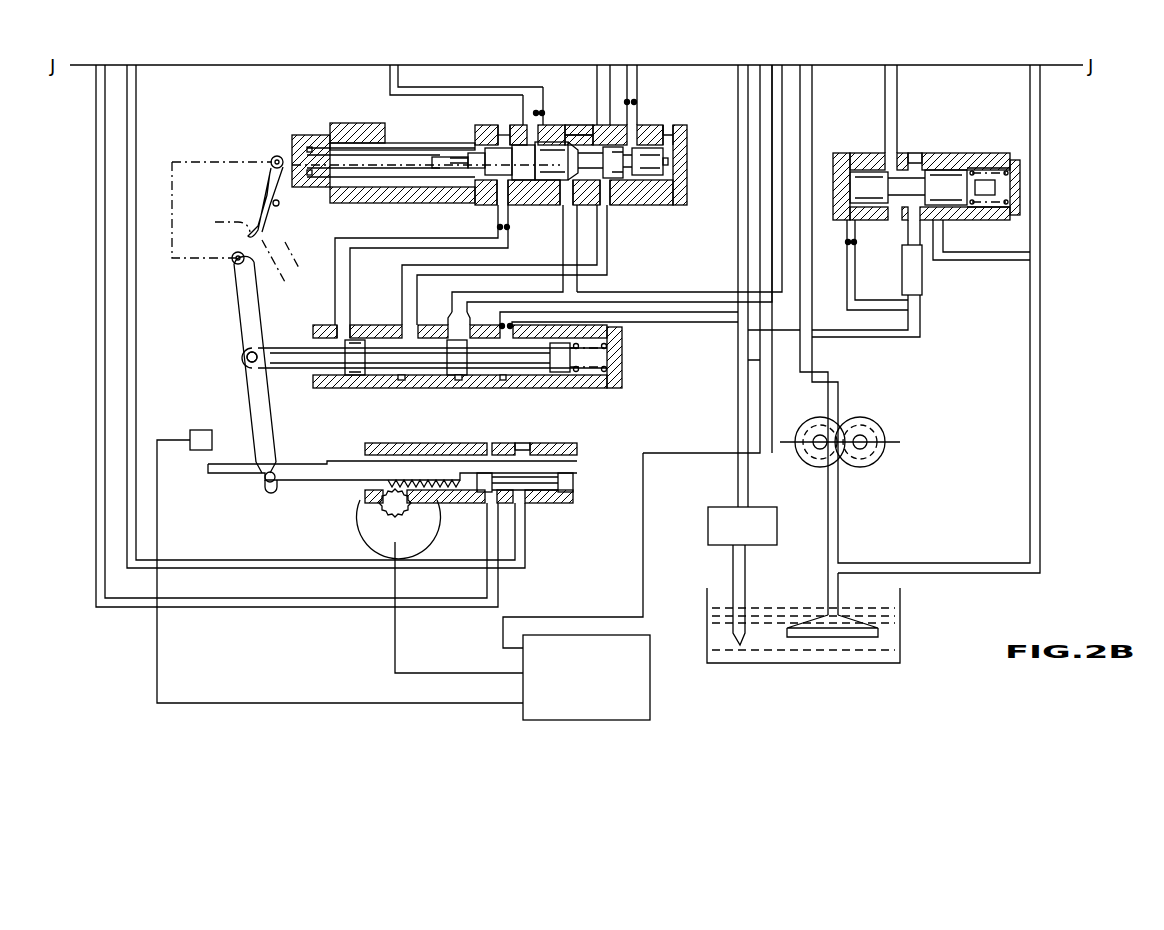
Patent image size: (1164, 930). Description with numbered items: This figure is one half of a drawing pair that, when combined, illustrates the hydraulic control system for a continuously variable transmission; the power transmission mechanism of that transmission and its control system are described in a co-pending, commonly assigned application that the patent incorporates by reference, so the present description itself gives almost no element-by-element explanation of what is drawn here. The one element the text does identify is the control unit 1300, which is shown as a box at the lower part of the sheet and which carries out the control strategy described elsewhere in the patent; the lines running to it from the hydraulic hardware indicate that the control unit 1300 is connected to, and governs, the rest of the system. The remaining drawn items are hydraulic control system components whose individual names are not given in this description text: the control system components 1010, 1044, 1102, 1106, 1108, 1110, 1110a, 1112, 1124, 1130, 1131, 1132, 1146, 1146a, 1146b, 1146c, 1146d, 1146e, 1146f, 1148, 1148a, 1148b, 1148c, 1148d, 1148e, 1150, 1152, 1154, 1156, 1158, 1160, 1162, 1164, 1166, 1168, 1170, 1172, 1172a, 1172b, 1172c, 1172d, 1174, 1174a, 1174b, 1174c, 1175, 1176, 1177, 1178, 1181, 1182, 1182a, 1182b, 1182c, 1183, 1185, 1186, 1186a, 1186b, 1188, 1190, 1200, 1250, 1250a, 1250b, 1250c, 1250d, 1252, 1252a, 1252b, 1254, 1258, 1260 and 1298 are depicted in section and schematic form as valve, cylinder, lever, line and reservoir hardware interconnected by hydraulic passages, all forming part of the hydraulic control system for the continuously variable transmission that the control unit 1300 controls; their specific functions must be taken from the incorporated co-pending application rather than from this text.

The pump 1010 is at (877, 410).
The pivot lever link 1044 is at (285, 282).
The control valve assembly 1102 is at (714, 300).
The actuating cylinder assembly 1106 is at (550, 397).
The rack drive cylinder assembly 1108 is at (534, 512).
The pinion gear 1110 is at (352, 511).
The gear shaft 1110a is at (388, 525).
The lever assembly 1112 is at (237, 370).
The control valve 1124 is at (932, 140).
The lubricant tank 1130 is at (900, 655).
The relief valve 1131 is at (840, 640).
The fluid line 1132 is at (622, 325).
The valve spool 1146 is at (578, 142).
The spool port 1146a is at (480, 195).
The spool port 1146b is at (533, 226).
The spool land 1146c is at (605, 215).
The spool land 1146d is at (598, 205).
The spool land 1146e is at (640, 190).
The spool end 1146f is at (669, 185).
The valve housing 1148 is at (687, 150).
The housing port 1148a is at (495, 145).
The housing port 1148b is at (522, 135).
The housing port 1148c is at (548, 135).
The housing port 1148d is at (625, 125).
The housing port 1148e is at (668, 137).
The pilot cylinder housing 1150 is at (305, 135).
The pilot cylinder body 1152 is at (395, 128).
The pilot piston rod 1154 is at (403, 150).
The lever 1156 is at (276, 225).
The lever arm 1158 is at (284, 195).
The fluid passage 1160 is at (371, 249).
The fluid line 1162 is at (386, 76).
The return line 1164 is at (736, 90).
The fluid passage 1166 is at (497, 228).
The fluid line 1168 is at (530, 80).
The fluid line 1170 is at (627, 100).
The cylinder 1172 is at (363, 388).
The cylinder port 1172a is at (340, 380).
The cylinder port 1172b is at (403, 386).
The cylinder port 1172c is at (458, 385).
The cylinder port 1172d is at (505, 385).
The piston rod 1174 is at (293, 350).
The piston 1174a is at (356, 343).
The piston 1174b is at (417, 330).
The piston 1174c is at (582, 347).
The end cap 1175 is at (598, 390).
The fluid line 1176 is at (724, 292).
The throttle 1177 is at (503, 312).
The lever 1178 is at (257, 390).
The pivot pin 1181 is at (246, 352).
The rack bar 1182 is at (308, 480).
The piston 1182a is at (485, 473).
The piston 1182b is at (566, 478).
The rack teeth 1182c is at (446, 500).
The pivot 1183 is at (275, 156).
The roller 1185 is at (265, 482).
The cylinder housing 1186 is at (562, 463).
The cylinder chamber 1186a is at (490, 510).
The cylinder chamber 1186b is at (540, 505).
The fluid line 1188 is at (252, 612).
The fluid line 1190 is at (140, 100).
The supply line 1200 is at (917, 562).
The valve housing 1250 is at (1012, 170).
The valve land 1250a is at (850, 155).
The valve port 1250b is at (893, 152).
The valve land 1250c is at (925, 155).
The valve port 1250d is at (1005, 158).
The spring cap 1252 is at (1005, 190).
The valve port 1252a is at (870, 195).
The valve port 1252b is at (955, 205).
The spring 1254 is at (983, 203).
The fluid line 1258 is at (900, 242).
The restrictor 1260 is at (923, 288).
The sensor 1298 is at (200, 430).
The control unit 1300 is at (652, 713).